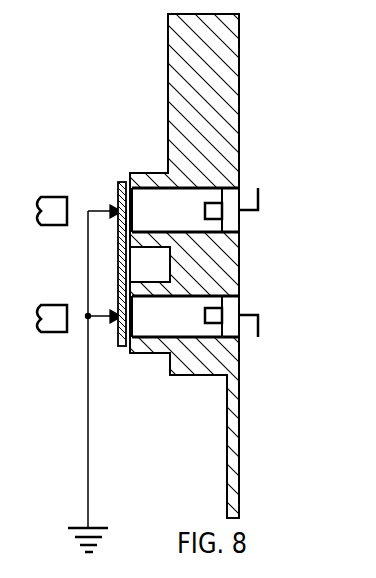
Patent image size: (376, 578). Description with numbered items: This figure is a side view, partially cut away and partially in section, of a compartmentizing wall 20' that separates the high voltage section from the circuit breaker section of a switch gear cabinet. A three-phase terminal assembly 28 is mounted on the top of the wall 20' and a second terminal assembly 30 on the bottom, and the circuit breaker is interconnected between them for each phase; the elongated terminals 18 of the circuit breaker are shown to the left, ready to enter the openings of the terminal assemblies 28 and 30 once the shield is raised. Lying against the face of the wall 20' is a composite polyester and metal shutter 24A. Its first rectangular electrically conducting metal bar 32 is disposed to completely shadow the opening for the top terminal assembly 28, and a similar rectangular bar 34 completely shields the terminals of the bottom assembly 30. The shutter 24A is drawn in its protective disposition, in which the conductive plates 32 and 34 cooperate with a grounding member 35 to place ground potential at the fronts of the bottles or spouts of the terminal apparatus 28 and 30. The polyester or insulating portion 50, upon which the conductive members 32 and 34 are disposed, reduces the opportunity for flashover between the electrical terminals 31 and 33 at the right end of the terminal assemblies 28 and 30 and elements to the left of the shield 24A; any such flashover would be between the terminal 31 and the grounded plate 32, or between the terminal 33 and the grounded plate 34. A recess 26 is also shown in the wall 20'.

The compartmentizing wall 20' is at (188, 289).
The elongated terminals 18 is at (47, 225).
The composite polyester and metal shutter 24A is at (122, 182).
The recess 26 is at (130, 282).
The top three-phase terminal assembly 28 is at (147, 205).
The bottom three-phase terminal assembly 30 is at (152, 346).
The electrical terminal 31 is at (232, 197).
The first rectangular electrically conducting metal bar 32 is at (113, 193).
The electrical terminal 33 is at (232, 305).
The rectangular bar 34 is at (116, 338).
The grounding member 35 is at (89, 444).
The polyester insulating portion 50 is at (132, 222).